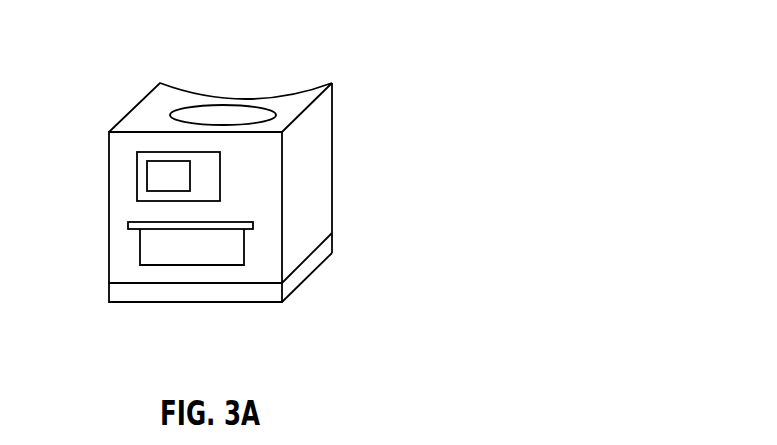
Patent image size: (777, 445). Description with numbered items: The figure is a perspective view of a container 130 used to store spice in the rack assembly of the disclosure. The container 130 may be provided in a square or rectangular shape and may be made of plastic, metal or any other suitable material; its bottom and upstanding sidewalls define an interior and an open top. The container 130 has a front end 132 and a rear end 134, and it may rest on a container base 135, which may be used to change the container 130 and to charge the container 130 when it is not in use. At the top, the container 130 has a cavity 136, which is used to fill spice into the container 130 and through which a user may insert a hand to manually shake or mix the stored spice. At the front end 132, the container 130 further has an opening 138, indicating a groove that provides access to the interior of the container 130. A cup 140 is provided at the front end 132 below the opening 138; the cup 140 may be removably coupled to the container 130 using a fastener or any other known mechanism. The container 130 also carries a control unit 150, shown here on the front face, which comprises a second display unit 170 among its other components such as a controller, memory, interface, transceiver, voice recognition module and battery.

The container 130 is at (333, 215).
The front end 132 is at (156, 320).
The rear end 134 is at (336, 39).
The container base 135 is at (308, 277).
The cavity 136 is at (227, 104).
The opening 138 is at (144, 230).
The cup 140 is at (227, 265).
The control unit 150 is at (150, 152).
The second display unit 170 is at (147, 181).